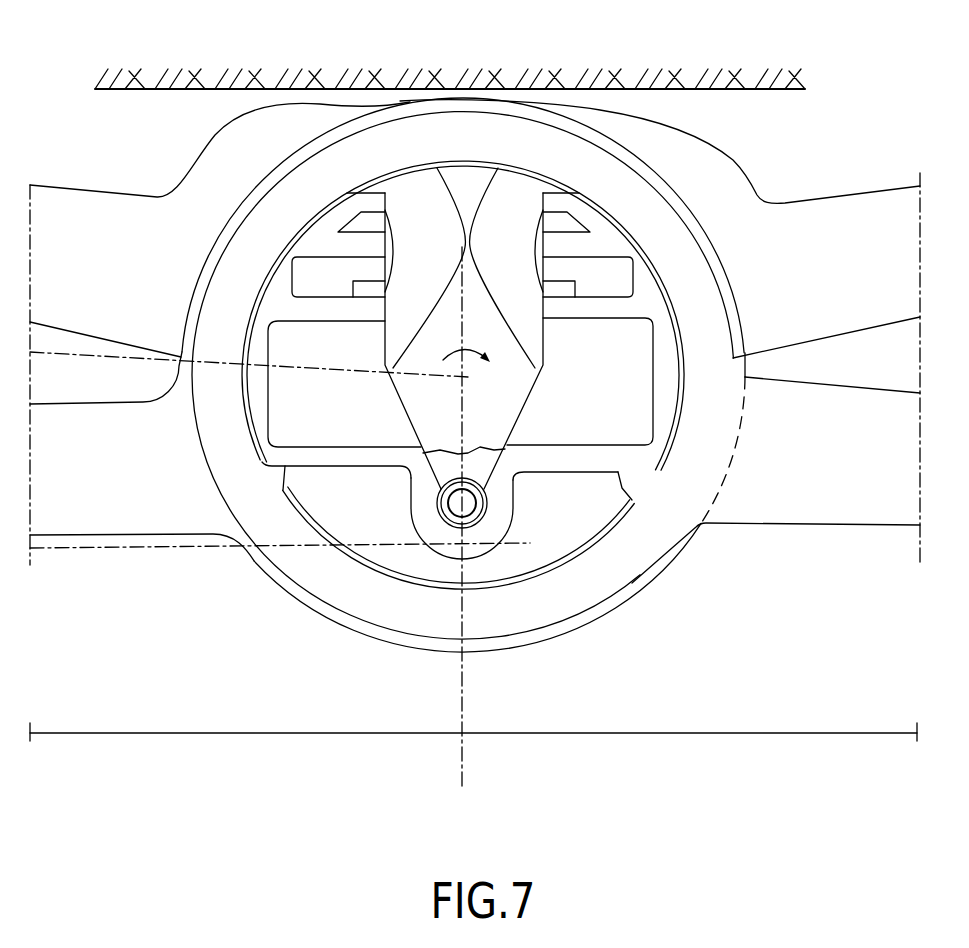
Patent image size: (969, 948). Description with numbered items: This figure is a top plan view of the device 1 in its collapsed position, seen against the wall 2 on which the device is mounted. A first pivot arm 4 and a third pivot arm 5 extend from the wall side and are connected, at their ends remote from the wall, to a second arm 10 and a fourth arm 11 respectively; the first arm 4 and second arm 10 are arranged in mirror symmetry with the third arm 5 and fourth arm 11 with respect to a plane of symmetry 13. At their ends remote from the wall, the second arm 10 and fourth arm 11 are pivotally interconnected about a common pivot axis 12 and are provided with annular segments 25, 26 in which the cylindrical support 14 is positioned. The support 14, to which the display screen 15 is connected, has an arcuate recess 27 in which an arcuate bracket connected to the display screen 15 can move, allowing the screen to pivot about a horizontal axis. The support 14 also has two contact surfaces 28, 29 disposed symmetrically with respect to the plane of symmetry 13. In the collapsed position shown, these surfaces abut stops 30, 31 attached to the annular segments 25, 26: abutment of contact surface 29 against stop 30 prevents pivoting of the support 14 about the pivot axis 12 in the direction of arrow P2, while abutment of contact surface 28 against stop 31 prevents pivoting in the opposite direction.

The device 1 is at (766, 172).
The wall 2 is at (497, 90).
The first pivot arm 4 is at (103, 240).
The third pivot arm 5 is at (850, 220).
The second arm 10 is at (93, 497).
The fourth arm 11 is at (845, 505).
The pivot axis 12 is at (463, 377).
The plane of symmetry 13 is at (463, 673).
The support 14 is at (607, 340).
The display screen 15 is at (788, 733).
The annular segment 25 is at (420, 640).
The annular segment 26 is at (580, 583).
The arcuate recess 27 is at (323, 274).
The contact surface 28 is at (325, 466).
The contact surface 29 is at (592, 471).
The stop 30 is at (635, 485).
The stop 31 is at (278, 476).
The arrow P2 is at (479, 372).